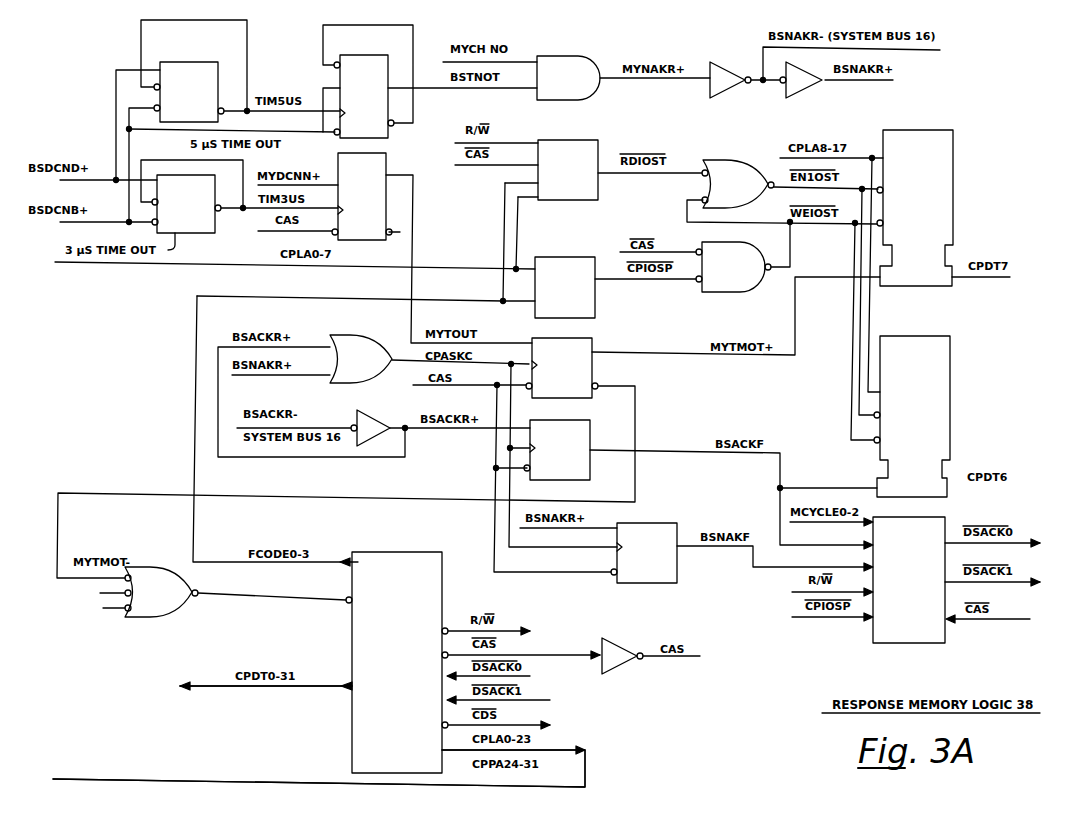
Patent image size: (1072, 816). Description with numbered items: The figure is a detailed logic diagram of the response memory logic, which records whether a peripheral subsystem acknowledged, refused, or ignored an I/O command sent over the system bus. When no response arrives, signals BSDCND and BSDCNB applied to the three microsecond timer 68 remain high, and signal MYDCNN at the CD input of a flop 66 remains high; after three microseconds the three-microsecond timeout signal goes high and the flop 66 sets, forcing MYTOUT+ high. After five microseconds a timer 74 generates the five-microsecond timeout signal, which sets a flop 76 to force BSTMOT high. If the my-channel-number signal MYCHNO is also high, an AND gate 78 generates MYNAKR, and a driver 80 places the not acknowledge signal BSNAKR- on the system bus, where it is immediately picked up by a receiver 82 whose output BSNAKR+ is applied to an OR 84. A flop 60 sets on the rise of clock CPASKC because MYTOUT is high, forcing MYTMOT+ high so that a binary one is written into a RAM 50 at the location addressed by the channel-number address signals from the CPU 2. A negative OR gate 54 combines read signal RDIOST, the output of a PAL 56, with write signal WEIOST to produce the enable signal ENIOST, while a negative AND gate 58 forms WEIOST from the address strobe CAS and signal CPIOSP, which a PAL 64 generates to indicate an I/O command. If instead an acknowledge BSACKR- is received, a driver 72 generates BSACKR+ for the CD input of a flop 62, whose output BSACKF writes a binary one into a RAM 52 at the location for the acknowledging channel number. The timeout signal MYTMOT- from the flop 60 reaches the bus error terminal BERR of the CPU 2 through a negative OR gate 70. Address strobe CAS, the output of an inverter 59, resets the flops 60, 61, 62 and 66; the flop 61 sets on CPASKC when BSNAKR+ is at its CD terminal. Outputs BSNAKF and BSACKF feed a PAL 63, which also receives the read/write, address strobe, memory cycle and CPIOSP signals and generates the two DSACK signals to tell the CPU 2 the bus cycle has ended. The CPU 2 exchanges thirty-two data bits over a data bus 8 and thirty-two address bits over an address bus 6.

The CPU 2 is at (420, 552).
The address bus 6 is at (585, 770).
The data bus 8 is at (272, 686).
The random access memory (RAM) 50 is at (932, 130).
The RAM 52 is at (925, 336).
The negative OR gate 54 is at (725, 160).
The PAL 56 is at (580, 140).
The negative AND gate 58 is at (740, 292).
The inverter 59 is at (620, 640).
The flop 60 is at (600, 329).
The flop 61 is at (662, 523).
The flop 62 is at (590, 438).
The PAL 63 is at (930, 643).
The programmable array logic (PAL) 64 is at (565, 257).
The flop 66 is at (383, 160).
The 3 microsecond timer 68 is at (205, 233).
The negative OR gate 70 is at (175, 617).
The driver 72 is at (370, 412).
The timer 74 is at (190, 62).
The flop 76 is at (365, 55).
The AND gate 78 is at (570, 56).
The driver 80 is at (718, 62).
The receiver 82 is at (805, 92).
The OR 84 is at (345, 335).